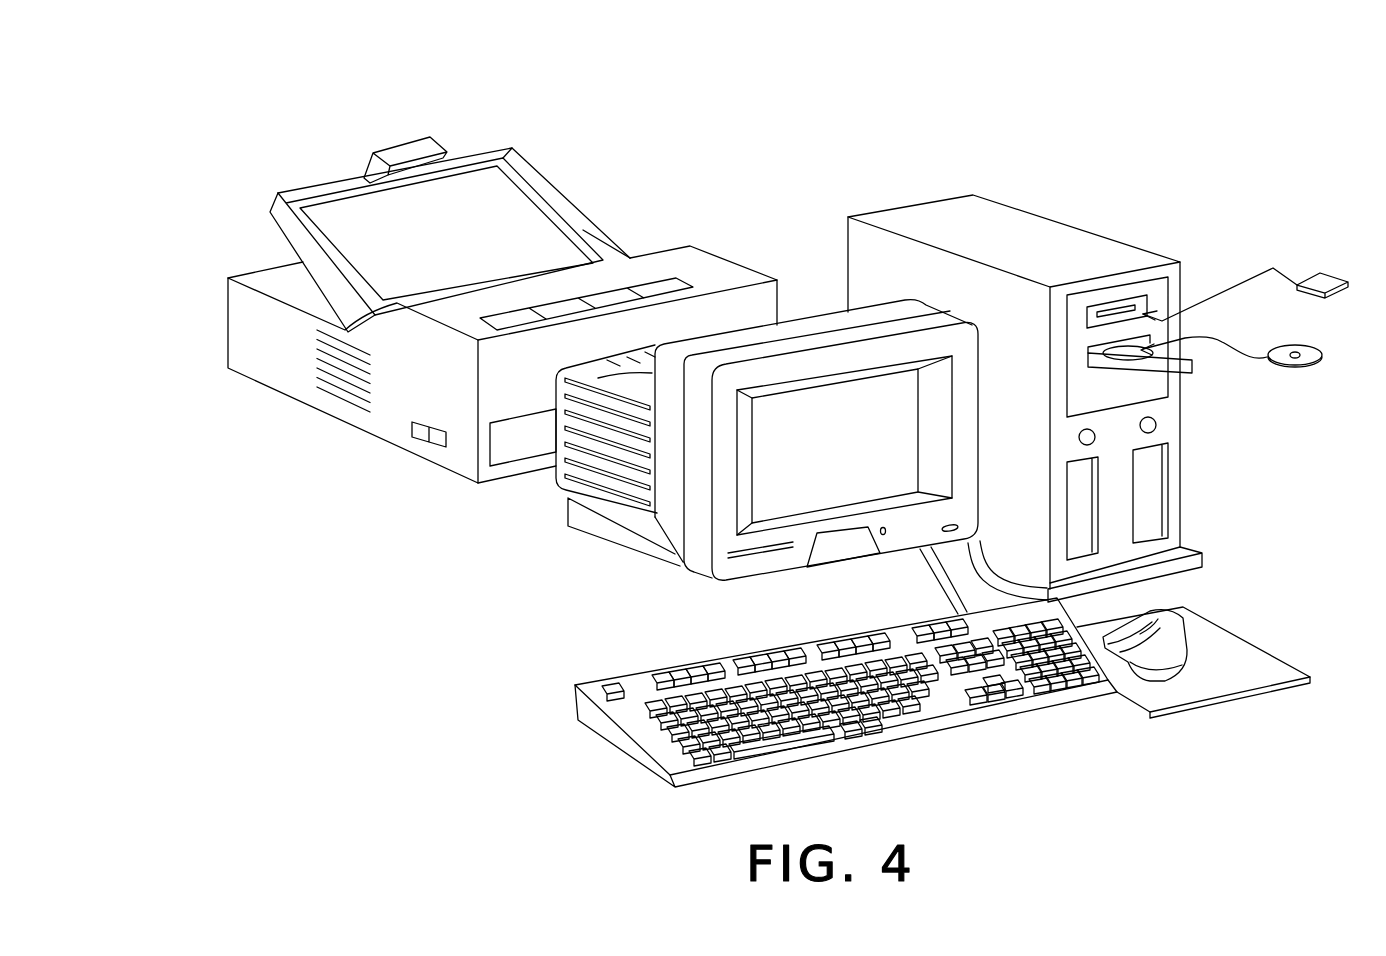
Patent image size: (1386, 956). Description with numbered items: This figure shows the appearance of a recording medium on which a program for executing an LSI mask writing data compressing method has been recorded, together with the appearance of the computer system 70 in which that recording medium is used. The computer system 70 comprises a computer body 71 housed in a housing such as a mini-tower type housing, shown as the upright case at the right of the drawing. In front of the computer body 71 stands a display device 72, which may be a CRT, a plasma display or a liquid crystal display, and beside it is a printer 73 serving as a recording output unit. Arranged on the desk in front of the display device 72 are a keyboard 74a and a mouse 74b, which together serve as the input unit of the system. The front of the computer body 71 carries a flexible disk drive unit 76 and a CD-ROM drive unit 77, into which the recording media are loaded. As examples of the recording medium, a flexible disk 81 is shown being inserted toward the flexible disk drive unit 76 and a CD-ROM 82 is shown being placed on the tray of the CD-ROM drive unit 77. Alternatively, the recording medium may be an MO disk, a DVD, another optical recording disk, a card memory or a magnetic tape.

The computer system 70 is at (888, 159).
The computer body 71 is at (1047, 237).
The display device 72 is at (807, 338).
The printer 73 is at (705, 273).
The keyboard 74a is at (607, 732).
The mouse 74b is at (1168, 652).
The flexible disk drive unit 76 is at (1130, 307).
The CD-ROM drive unit 77 is at (1183, 372).
The flexible disk 81 is at (1320, 272).
The CD-ROM 82 is at (1310, 368).